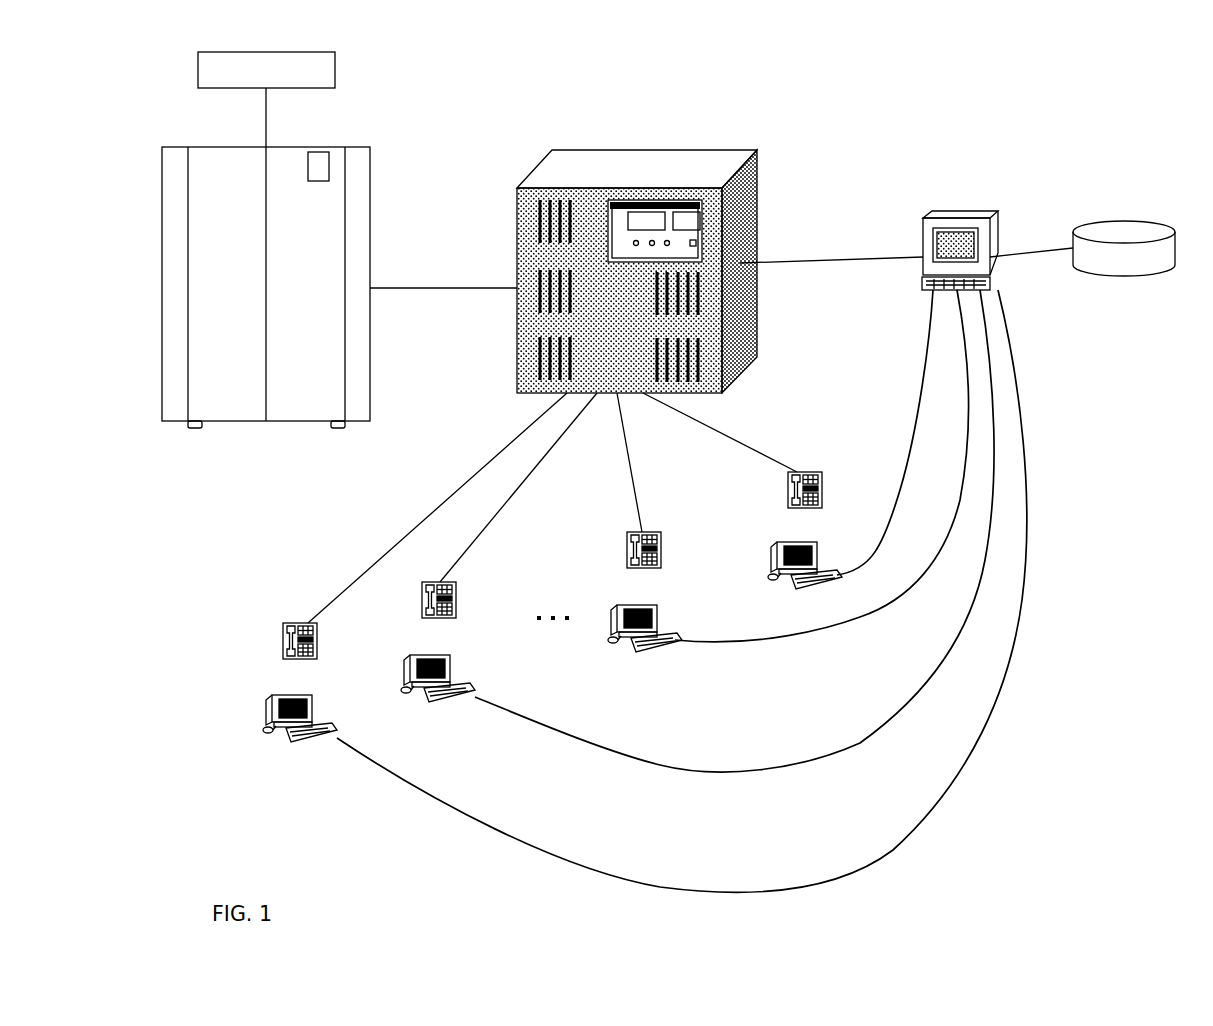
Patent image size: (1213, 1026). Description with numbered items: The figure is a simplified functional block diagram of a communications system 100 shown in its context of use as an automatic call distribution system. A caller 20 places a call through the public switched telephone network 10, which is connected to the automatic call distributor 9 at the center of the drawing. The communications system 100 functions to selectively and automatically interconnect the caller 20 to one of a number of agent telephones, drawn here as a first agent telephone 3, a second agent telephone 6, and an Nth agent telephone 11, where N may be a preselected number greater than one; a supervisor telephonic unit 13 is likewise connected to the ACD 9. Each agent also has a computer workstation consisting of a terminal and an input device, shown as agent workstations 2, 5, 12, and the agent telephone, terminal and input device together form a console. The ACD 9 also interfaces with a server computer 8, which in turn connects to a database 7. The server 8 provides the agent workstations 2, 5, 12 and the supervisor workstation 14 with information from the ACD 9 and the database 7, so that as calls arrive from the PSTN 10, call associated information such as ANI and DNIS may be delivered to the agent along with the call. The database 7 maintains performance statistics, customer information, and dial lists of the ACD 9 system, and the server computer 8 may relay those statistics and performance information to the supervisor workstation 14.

The communications system 100 is at (882, 118).
The caller 20 is at (260, 52).
The public switched telephone network 10 is at (356, 147).
The automatic call distributor 9 is at (747, 150).
The server computer 8 is at (962, 210).
The database 7 is at (1145, 228).
The agent telephone 3 is at (288, 621).
The agent telephone 6 is at (423, 582).
The agent telephone 11 is at (653, 532).
The supervisor telephonic unit 13 is at (813, 472).
The agent workstation 2 is at (320, 720).
The agent workstation 5 is at (457, 678).
The agent workstation 12 is at (658, 630).
The supervisor workstation 14 is at (825, 567).